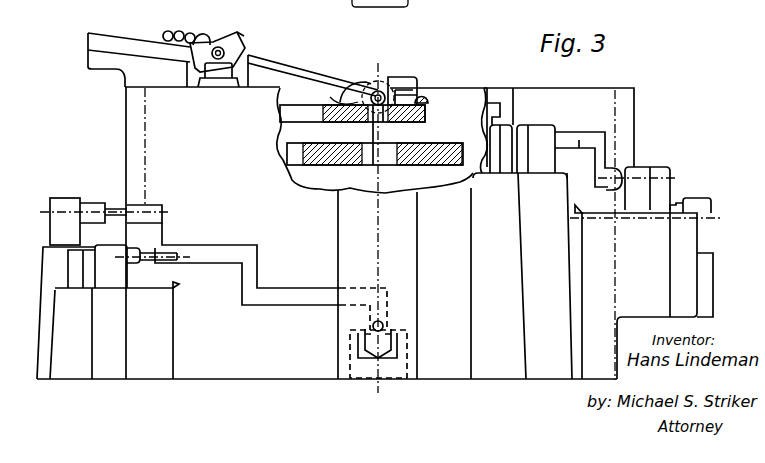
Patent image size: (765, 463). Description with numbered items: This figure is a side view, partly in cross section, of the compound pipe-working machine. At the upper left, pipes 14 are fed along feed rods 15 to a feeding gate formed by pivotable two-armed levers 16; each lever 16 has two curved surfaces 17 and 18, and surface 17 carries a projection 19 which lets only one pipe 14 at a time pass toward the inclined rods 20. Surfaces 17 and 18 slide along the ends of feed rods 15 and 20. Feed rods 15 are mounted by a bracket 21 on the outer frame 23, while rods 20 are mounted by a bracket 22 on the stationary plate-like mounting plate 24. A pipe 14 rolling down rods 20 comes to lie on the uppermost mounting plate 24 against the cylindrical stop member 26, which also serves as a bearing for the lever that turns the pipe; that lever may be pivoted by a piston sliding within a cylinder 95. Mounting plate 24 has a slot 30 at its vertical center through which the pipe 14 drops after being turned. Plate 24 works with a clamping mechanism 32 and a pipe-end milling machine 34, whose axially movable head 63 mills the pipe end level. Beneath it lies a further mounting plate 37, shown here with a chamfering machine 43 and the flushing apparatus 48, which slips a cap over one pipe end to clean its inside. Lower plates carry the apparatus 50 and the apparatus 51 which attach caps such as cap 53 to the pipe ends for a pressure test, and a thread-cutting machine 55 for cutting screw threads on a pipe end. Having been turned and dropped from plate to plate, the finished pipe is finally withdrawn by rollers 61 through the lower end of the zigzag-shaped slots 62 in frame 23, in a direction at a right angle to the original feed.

The pipe 14 is at (184, 34).
The feed rod 15 is at (125, 40).
The two-armed lever 16 is at (236, 40).
The curved surface 17 is at (190, 66).
The curved surface 18 is at (244, 36).
The projection 19 is at (201, 34).
The rod 20 is at (301, 74).
The bracket 21 is at (112, 62).
The bracket 22 is at (265, 78).
The outer frame 23 is at (124, 118).
The mounting plate 24 is at (424, 120).
The stop member 26 is at (421, 94).
The slot 30 is at (374, 113).
The clamping mechanism 32 is at (410, 78).
The pipe-end milling machine 34 is at (369, 89).
The mounting plate 37 is at (440, 151).
The chamfering machine 43 is at (543, 131).
The flushing apparatus 48 is at (641, 172).
The cap attaching apparatus 50 is at (689, 200).
The cap attaching apparatus 51 is at (63, 208).
The cap 53 is at (99, 208).
The thread-cutting machine 55 is at (109, 278).
The roller 61 is at (392, 345).
The zigzag-shaped slot 62 is at (597, 156).
The axially movable head 63 is at (380, 83).
The cylinder 95 is at (436, 93).